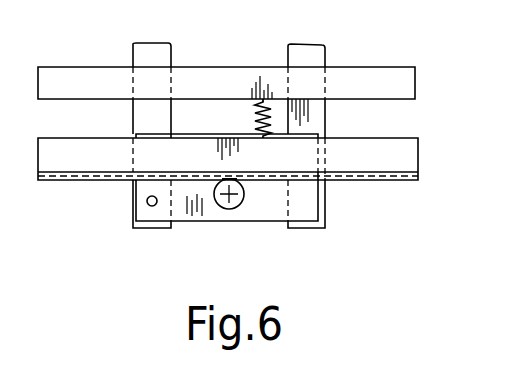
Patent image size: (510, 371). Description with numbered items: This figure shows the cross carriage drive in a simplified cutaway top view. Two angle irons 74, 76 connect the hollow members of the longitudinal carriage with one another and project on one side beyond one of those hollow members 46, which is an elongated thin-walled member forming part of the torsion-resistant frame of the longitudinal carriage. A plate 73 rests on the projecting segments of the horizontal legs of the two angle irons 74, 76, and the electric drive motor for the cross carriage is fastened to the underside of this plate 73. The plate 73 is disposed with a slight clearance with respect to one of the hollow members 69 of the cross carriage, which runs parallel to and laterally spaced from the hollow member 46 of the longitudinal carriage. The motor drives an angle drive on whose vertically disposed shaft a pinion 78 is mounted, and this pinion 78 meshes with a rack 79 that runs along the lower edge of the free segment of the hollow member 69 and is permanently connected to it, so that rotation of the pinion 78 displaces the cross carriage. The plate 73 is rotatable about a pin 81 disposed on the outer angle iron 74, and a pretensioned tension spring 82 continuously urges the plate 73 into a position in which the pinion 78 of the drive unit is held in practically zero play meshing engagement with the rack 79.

The hollow member 46 is at (225, 80).
The hollow member 69 is at (367, 153).
The plate 73 is at (263, 211).
The angle iron 74 is at (165, 229).
The angle iron 76 is at (306, 229).
The pinion 78 is at (232, 209).
The rack 79 is at (352, 178).
The pin 81 is at (150, 206).
The tension spring 82 is at (258, 117).